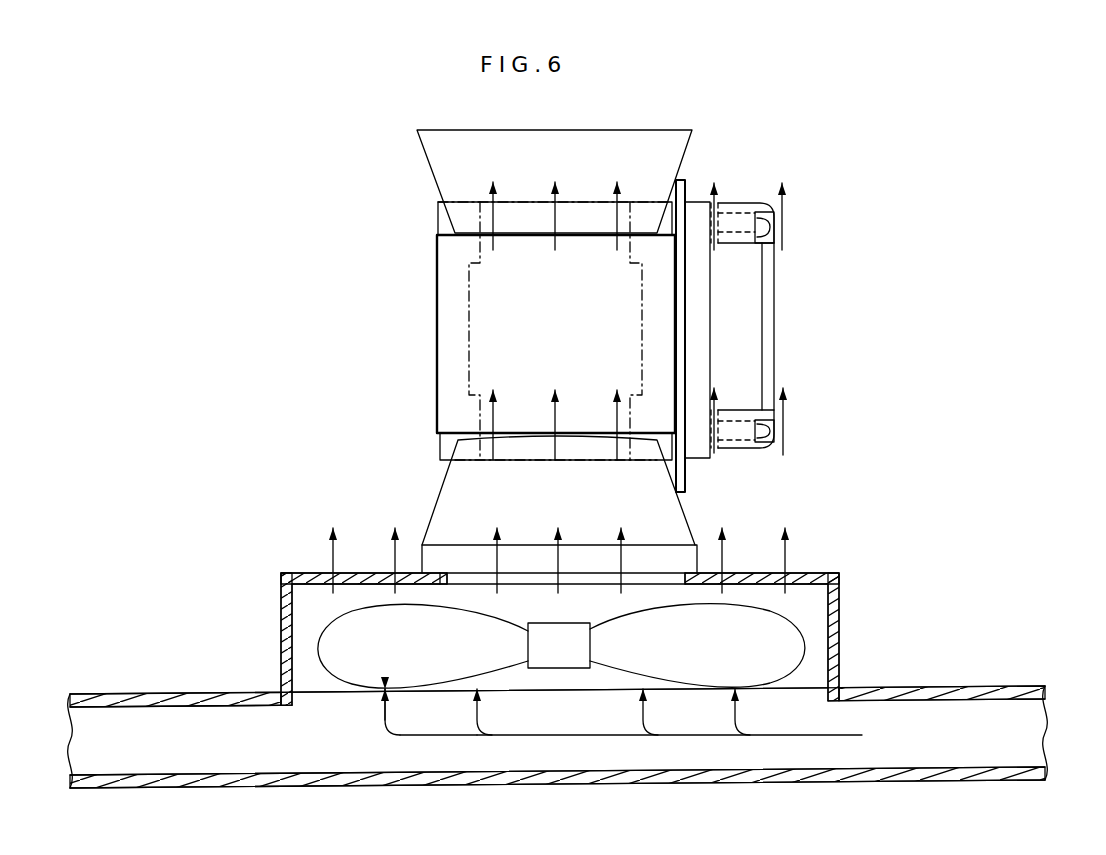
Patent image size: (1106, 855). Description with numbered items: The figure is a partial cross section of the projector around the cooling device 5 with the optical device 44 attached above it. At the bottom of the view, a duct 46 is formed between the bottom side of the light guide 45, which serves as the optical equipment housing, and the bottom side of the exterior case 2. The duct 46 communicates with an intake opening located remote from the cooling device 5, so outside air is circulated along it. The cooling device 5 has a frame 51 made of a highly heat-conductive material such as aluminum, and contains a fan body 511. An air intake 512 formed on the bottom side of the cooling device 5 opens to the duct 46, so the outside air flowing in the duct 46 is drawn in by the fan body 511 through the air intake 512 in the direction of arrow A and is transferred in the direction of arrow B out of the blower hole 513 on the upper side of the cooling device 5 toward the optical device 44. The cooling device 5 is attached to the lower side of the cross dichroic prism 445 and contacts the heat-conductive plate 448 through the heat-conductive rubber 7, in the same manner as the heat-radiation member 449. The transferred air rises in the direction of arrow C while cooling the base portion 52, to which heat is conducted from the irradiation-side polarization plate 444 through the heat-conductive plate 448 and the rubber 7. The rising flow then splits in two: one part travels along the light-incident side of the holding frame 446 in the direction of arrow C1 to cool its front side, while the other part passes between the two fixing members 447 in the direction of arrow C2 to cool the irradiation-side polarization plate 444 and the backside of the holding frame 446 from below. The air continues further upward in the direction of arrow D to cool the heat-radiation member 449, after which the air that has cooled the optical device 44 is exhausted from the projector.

The exterior case 2 is at (1022, 772).
The light guide 45 is at (973, 685).
The duct 46 is at (1032, 730).
The cooling device 5 is at (948, 523).
The frame 51 is at (837, 597).
The fan body 511 is at (315, 628).
The air intake 512 is at (810, 683).
The blower hole 513 is at (450, 570).
The base portion 52 is at (452, 485).
The optical device 44 is at (932, 155).
The irradiation-side polarization plate 444 is at (803, 145).
The cross dichroic prism 445 is at (437, 288).
The holding frame 446 is at (752, 258).
The fixing members 447 is at (697, 200).
The heat-conductive plate 448 is at (680, 180).
The heat-radiation member 449 is at (556, 150).
The heat-conductive rubber 7 is at (697, 218).
The arrow A is at (573, 737).
The arrow B is at (786, 548).
The arrow C is at (493, 420).
The arrow C1 is at (784, 427).
The arrow C2 is at (718, 452).
The arrow D is at (783, 213).